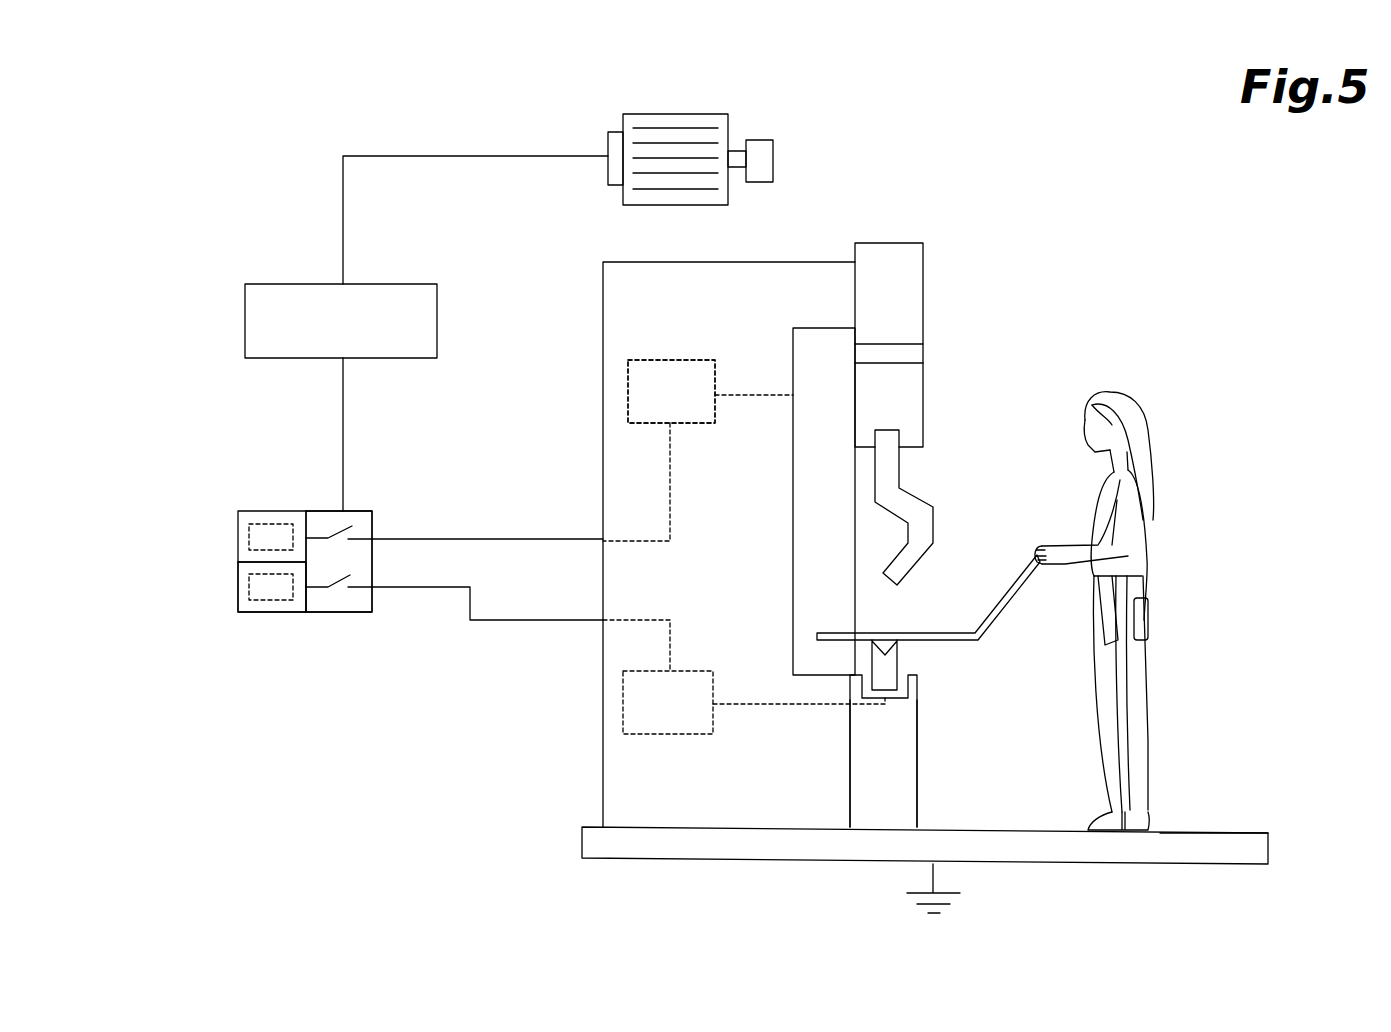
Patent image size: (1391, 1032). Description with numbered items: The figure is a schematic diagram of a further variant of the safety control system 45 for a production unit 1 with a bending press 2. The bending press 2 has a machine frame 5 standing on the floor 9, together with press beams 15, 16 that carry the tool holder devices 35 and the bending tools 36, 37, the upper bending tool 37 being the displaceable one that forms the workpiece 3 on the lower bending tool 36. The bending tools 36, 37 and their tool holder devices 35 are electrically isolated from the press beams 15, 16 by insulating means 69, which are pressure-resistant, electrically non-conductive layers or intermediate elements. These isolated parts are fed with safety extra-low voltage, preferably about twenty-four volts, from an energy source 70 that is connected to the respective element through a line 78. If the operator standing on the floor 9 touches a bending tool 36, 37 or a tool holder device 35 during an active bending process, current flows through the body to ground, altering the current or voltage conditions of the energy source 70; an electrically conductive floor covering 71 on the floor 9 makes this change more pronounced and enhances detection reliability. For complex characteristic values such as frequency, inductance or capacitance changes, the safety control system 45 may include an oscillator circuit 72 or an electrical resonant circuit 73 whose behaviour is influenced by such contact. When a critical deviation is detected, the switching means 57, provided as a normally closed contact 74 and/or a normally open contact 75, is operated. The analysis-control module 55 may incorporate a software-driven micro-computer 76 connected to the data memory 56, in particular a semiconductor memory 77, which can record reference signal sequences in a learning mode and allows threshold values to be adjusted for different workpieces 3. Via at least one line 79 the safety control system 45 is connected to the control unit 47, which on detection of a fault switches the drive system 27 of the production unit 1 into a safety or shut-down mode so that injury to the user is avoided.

The production unit 1 is at (1085, 235).
The bending press 2 is at (964, 241).
The workpiece 3 is at (930, 632).
The machine frame 5 is at (623, 797).
The floor 9 is at (1175, 830).
The press beam 15 is at (885, 792).
The press beam 16 is at (898, 281).
The drive system 27 is at (812, 118).
The tool holder device 35 is at (873, 415).
The bending tool 36 is at (926, 660).
The bending tool 37 is at (958, 478).
The safety control system 45 is at (186, 565).
The control unit 47 is at (232, 268).
The analysis-control module 55 is at (258, 511).
The data memory 56 is at (276, 605).
The switching means 57 is at (340, 600).
The insulating means 69 is at (902, 353).
The energy source 70 is at (702, 360).
The floor covering 71 is at (1222, 850).
The oscillator circuit 72 is at (680, 345).
The electrical resonant circuit 73 is at (718, 345).
The normally closed contact 74 is at (371, 511).
The normally open contact 75 is at (363, 566).
The micro-computer 76 is at (263, 538).
The semiconductor memory 77 is at (262, 585).
The line 78 is at (776, 401).
The line 79 is at (336, 428).